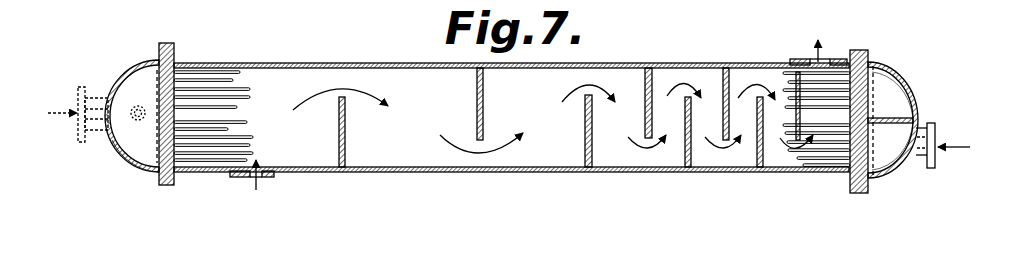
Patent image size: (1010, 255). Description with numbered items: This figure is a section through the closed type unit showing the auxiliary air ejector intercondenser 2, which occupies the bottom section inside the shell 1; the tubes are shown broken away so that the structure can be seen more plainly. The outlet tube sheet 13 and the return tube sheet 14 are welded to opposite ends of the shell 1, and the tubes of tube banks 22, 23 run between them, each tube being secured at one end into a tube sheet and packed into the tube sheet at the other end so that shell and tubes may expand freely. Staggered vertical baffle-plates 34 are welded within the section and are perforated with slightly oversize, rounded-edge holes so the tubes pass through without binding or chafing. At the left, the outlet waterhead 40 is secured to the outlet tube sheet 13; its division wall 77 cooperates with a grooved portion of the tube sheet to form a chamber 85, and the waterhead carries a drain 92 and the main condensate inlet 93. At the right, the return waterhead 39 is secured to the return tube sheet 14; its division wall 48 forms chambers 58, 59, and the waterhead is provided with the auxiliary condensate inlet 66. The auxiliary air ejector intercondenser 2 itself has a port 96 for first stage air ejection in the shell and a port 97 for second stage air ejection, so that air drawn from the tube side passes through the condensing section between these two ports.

The shell 1 is at (614, 64).
The auxiliary air ejector intercondenser 2 is at (448, 158).
The outlet tube sheet 13 is at (172, 44).
The return tube sheet 14 is at (860, 51).
The tube bank 22 is at (240, 85).
The tube bank 23 is at (248, 122).
The vertical baffle-plate 34 is at (478, 128).
The return waterhead 39 is at (909, 98).
The outlet waterhead 40 is at (124, 76).
The division wall 48 is at (915, 115).
The chamber 58 is at (884, 85).
The chamber 59 is at (880, 173).
The auxiliary condensate inlet 66 is at (932, 157).
The division wall 77 is at (140, 78).
The chamber 85 is at (137, 143).
The drain 92 is at (130, 107).
The main condensate inlet 93 is at (81, 127).
The port for first stage air ejection 96 is at (264, 174).
The port for second stage air ejection 97 is at (823, 58).